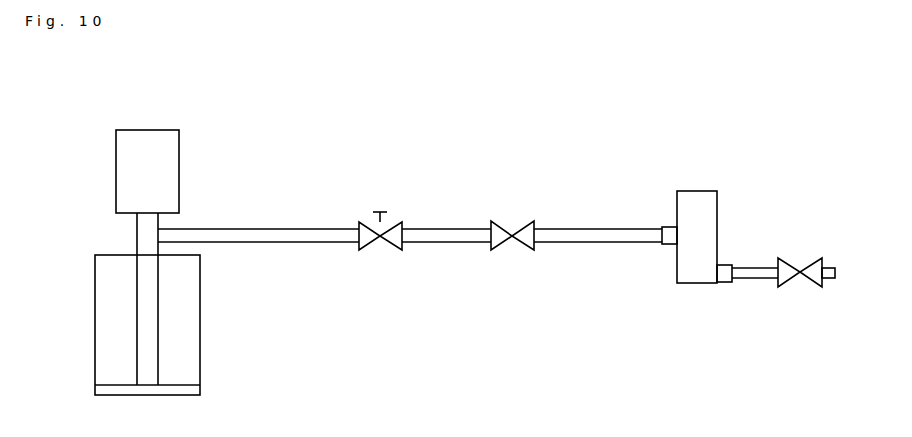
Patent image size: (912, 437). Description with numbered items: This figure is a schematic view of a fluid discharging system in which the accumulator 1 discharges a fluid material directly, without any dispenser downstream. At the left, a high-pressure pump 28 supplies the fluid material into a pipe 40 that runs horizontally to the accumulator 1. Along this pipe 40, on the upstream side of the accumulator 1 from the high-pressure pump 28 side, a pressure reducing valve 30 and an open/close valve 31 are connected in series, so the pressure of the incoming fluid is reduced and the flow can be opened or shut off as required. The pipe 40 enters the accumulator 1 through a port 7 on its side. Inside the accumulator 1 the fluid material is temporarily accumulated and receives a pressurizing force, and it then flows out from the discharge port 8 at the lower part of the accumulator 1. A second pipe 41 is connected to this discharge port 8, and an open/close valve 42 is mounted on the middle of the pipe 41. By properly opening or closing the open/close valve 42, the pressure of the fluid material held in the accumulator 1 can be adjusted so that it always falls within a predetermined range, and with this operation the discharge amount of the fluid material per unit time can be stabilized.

The accumulator 1 is at (677, 192).
The inlet port 7 is at (668, 229).
The discharge port 8 is at (725, 265).
The high-pressure pump 28 is at (179, 130).
The pressure reducing valve 30 is at (360, 224).
The open/close valve 31 is at (492, 222).
The pipe 40 is at (278, 229).
The pipe 41 is at (752, 279).
The open/close valve 42 is at (800, 281).